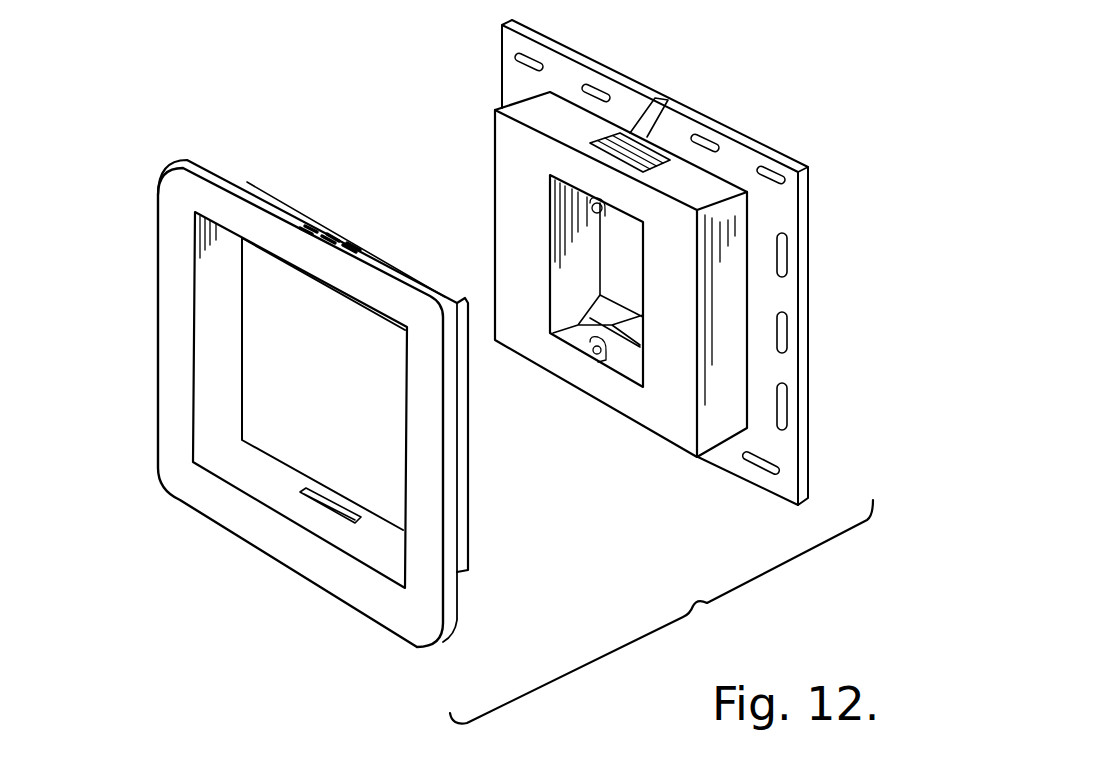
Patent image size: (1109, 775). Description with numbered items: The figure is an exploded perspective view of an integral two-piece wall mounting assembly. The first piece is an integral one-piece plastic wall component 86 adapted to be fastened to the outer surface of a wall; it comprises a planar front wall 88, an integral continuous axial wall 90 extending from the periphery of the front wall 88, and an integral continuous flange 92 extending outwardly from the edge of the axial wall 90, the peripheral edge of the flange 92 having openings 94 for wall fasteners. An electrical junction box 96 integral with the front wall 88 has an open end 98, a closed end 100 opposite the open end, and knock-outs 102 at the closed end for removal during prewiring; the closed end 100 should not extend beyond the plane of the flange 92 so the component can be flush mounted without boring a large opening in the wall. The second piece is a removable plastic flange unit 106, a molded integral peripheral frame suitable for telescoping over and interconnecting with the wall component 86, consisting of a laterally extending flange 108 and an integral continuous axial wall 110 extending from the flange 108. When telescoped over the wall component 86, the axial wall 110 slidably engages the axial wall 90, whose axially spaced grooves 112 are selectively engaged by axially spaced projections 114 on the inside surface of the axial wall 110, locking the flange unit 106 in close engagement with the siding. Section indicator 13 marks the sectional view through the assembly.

The section line 13- 13 is at (297, 424).
The wall component 86 is at (824, 157).
The front wall 88 is at (678, 362).
The axial wall 90 is at (730, 403).
The flange 92 is at (783, 450).
The openings 94 is at (590, 83).
The electrical junction box 96 is at (630, 239).
The open end 98 is at (566, 277).
The closed end 100 is at (610, 250).
The knock-outs 102 is at (615, 322).
The flange unit 106 is at (244, 163).
The laterally extending flange 108 is at (172, 411).
The axial wall 110 is at (210, 318).
The grooves 112 is at (668, 100).
The projections 114 is at (330, 223).